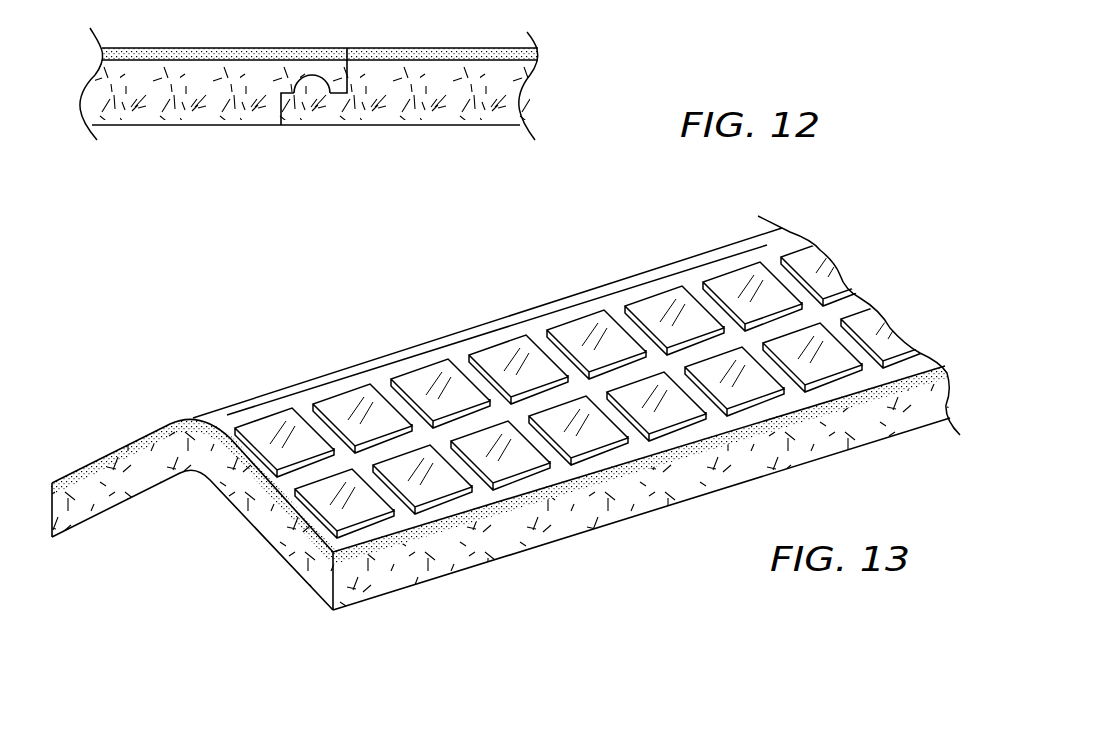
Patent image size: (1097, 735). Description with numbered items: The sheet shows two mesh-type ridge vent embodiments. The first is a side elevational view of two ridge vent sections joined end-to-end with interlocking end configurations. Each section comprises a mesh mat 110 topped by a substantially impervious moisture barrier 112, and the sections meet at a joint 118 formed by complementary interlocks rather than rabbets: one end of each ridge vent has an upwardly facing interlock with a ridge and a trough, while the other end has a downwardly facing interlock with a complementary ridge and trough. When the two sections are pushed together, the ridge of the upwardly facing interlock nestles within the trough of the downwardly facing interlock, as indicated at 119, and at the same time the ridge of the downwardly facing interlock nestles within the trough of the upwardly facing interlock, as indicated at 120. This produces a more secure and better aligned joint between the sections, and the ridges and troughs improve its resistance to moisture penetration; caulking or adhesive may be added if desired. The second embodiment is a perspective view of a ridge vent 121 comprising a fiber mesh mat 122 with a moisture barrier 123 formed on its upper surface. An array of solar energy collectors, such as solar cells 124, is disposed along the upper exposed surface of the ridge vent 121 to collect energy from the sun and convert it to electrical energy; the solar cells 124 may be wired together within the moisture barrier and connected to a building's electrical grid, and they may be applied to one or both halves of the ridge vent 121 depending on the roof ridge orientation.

In FIG. 12, the mesh mat 110 is at (192, 108).
In FIG. 12, the moisture barrier 112 is at (217, 53).
In FIG. 12, the joint 118 is at (292, 139).
In FIG. 12, the ridge of upwardly facing interlock nestled in trough of downwardly facing interl 119 is at (314, 76).
In FIG. 12, the ridge of downwardly facing interlock nestled in trough of upwardly facing interl 120 is at (348, 90).
In FIG. 13, the ridge vent 121 is at (182, 373).
In FIG. 13, the fiber mesh mat 122 is at (247, 540).
In FIG. 13, the moisture barrier 123 is at (300, 402).
In FIG. 13, the solar cells 124 is at (475, 442).